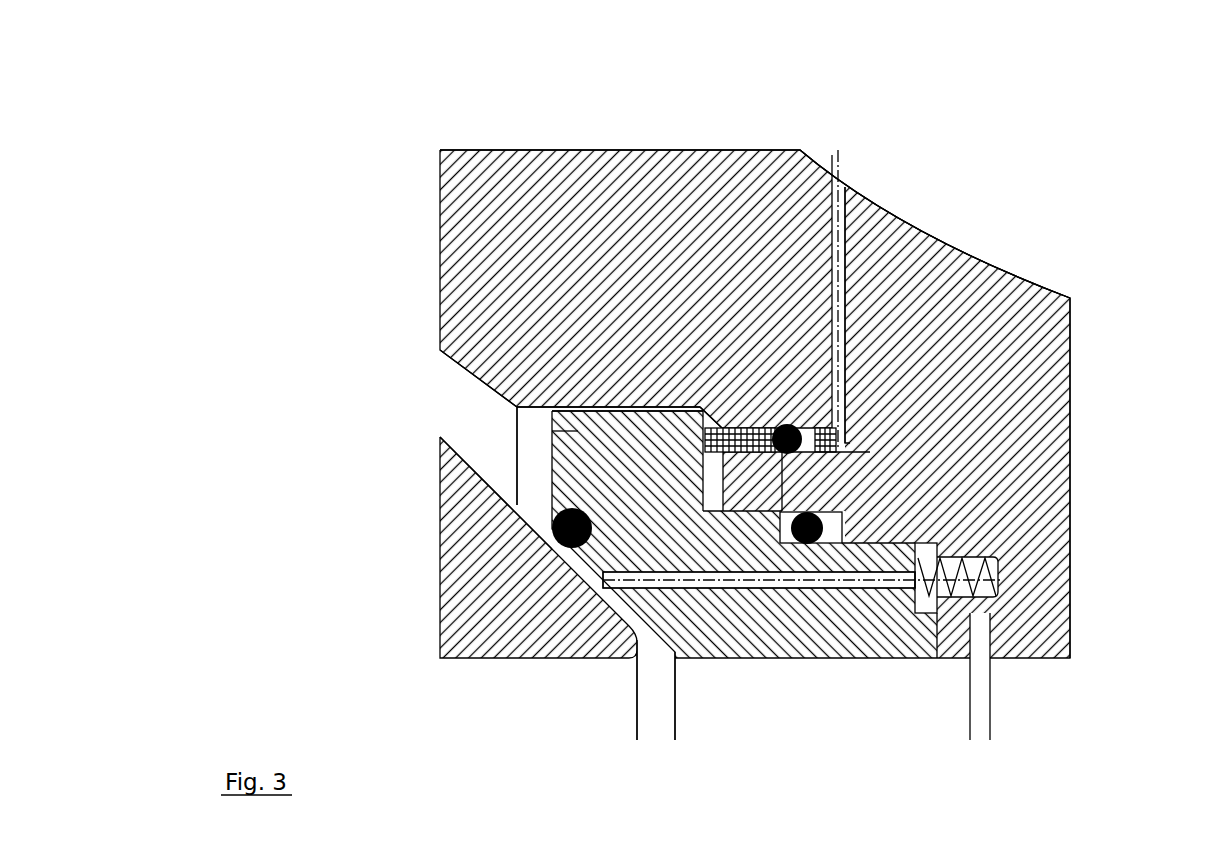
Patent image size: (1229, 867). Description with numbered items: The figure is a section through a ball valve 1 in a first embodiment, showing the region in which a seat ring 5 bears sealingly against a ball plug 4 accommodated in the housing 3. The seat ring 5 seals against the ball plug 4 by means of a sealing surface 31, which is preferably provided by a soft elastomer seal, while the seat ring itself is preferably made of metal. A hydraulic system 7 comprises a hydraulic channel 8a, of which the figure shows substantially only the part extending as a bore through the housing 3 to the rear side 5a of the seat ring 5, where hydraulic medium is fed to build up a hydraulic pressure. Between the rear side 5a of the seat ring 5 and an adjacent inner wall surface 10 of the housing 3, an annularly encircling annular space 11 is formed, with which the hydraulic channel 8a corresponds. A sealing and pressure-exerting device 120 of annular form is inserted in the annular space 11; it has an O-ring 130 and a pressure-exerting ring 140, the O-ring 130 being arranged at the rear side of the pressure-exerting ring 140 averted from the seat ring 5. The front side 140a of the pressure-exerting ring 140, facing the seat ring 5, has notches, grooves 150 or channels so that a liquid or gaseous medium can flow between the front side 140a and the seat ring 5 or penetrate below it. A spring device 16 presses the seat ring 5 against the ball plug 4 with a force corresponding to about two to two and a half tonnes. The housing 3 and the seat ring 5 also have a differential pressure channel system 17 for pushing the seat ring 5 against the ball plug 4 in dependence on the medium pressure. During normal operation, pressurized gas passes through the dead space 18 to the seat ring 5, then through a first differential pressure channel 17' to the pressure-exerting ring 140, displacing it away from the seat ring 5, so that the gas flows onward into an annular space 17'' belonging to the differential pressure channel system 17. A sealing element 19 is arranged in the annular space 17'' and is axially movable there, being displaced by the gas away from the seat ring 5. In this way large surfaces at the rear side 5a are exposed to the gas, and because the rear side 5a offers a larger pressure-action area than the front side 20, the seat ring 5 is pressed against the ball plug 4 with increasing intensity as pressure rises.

The ball valve 1 is at (849, 167).
The housing 3 is at (690, 180).
The ball plug 4 is at (550, 490).
The seat ring 5 is at (657, 420).
The rear side of the seat ring 5a is at (722, 408).
The hydraulic system 7 is at (859, 322).
The hydraulic channel 8a is at (845, 380).
The inner wall surface 10 is at (842, 447).
The annular space 11 is at (808, 455).
The spring device 16 is at (972, 614).
The differential pressure channel system 17 is at (594, 238).
The first differential pressure channel 17' is at (757, 436).
The annular space 17'' is at (1014, 543).
The dead space 18 is at (465, 397).
The sealing element 19 is at (822, 543).
The front side of the seat ring 20 is at (517, 510).
The sealing surface 31 is at (553, 540).
The sealing and pressure-exerting device 120 is at (762, 470).
The O-ring 130 is at (787, 455).
The pressure-exerting ring 140 is at (721, 458).
The front side of the pressure-exerting ring 140a is at (620, 623).
The grooves 150 is at (552, 431).